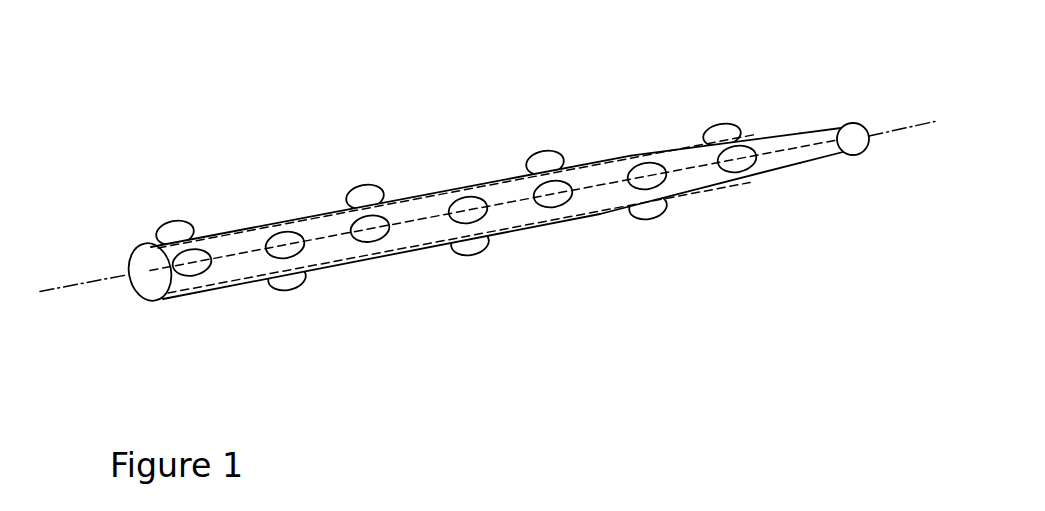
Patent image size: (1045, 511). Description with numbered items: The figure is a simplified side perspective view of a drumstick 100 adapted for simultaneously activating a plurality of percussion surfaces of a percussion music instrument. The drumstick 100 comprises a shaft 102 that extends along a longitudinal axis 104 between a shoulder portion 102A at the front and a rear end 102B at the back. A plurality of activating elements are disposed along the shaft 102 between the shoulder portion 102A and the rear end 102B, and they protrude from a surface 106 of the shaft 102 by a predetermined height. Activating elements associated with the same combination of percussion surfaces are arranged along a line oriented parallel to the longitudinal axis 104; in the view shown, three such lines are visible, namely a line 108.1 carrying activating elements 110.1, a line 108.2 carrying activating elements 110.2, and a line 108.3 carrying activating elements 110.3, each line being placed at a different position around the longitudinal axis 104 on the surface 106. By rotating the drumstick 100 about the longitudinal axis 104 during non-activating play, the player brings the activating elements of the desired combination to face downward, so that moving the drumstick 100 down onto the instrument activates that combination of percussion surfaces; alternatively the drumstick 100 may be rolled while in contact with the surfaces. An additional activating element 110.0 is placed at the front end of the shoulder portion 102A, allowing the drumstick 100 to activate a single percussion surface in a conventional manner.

The drumstick 100 is at (278, 82).
The shaft 102 is at (479, 252).
The shoulder portion 102A is at (823, 149).
The rear end 102B is at (159, 301).
The longitudinal axis 104 is at (112, 276).
The surface 106 is at (758, 174).
The line 108.1 is at (240, 223).
The line 108.2 is at (327, 235).
The line 108.3 is at (225, 288).
The activating element 110.0 is at (853, 139).
The activating elements 110.1 is at (538, 162).
The activating elements 110.2 is at (643, 181).
The activating elements 110.3 is at (487, 238).